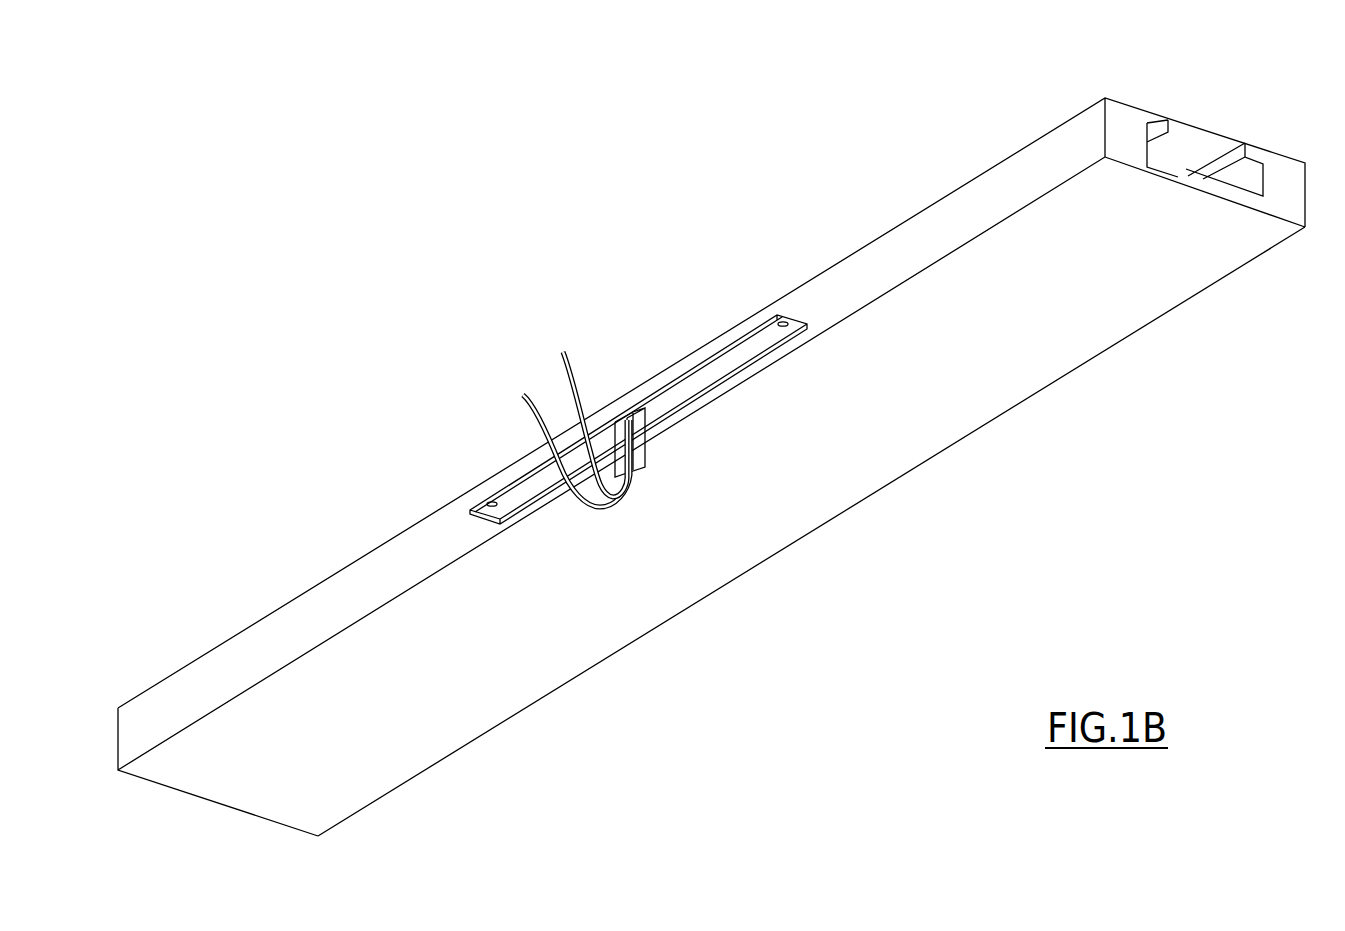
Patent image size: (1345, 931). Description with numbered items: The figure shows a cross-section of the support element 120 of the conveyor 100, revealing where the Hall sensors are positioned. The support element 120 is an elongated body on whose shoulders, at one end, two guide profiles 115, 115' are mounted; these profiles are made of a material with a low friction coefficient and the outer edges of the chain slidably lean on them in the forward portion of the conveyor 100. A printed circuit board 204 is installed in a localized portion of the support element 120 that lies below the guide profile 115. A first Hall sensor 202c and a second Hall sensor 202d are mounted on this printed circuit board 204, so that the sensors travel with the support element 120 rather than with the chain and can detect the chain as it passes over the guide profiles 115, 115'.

The conveyor 100 is at (296, 234).
The guide profile 115 is at (1169, 109).
The guide profile 115' is at (1250, 133).
The support element 120 is at (1239, 292).
The first Hall sensor 202c is at (783, 328).
The second Hall sensor 202d is at (488, 512).
The printed circuit board 204 is at (665, 412).